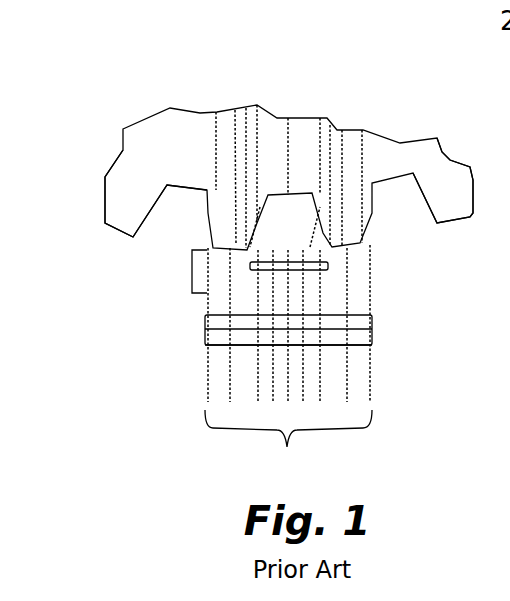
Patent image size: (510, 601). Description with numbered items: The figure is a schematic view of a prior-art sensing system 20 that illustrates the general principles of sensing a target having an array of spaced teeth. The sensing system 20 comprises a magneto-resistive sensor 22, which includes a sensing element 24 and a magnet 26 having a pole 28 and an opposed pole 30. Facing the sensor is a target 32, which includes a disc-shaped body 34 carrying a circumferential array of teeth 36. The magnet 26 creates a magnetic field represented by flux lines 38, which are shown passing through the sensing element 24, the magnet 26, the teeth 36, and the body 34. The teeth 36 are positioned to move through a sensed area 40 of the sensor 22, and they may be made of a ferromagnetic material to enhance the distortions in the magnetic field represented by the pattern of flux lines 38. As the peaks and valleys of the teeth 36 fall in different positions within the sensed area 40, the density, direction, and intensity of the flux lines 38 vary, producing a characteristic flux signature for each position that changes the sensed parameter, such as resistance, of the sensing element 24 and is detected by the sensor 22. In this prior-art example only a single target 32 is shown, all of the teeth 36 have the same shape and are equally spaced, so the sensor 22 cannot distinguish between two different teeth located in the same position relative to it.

The sensing system 20 is at (127, 102).
The magneto-resistive sensor 22 is at (167, 385).
The sensing element 24 is at (328, 266).
The magnet 26 is at (209, 338).
The pole 28 is at (362, 320).
The opposed pole 30 is at (370, 342).
The target 32 is at (385, 160).
The disc-shaped body 34 is at (272, 133).
The teeth 36 is at (128, 203).
The flux lines 38 is at (288, 445).
The sensed area 40 is at (190, 272).